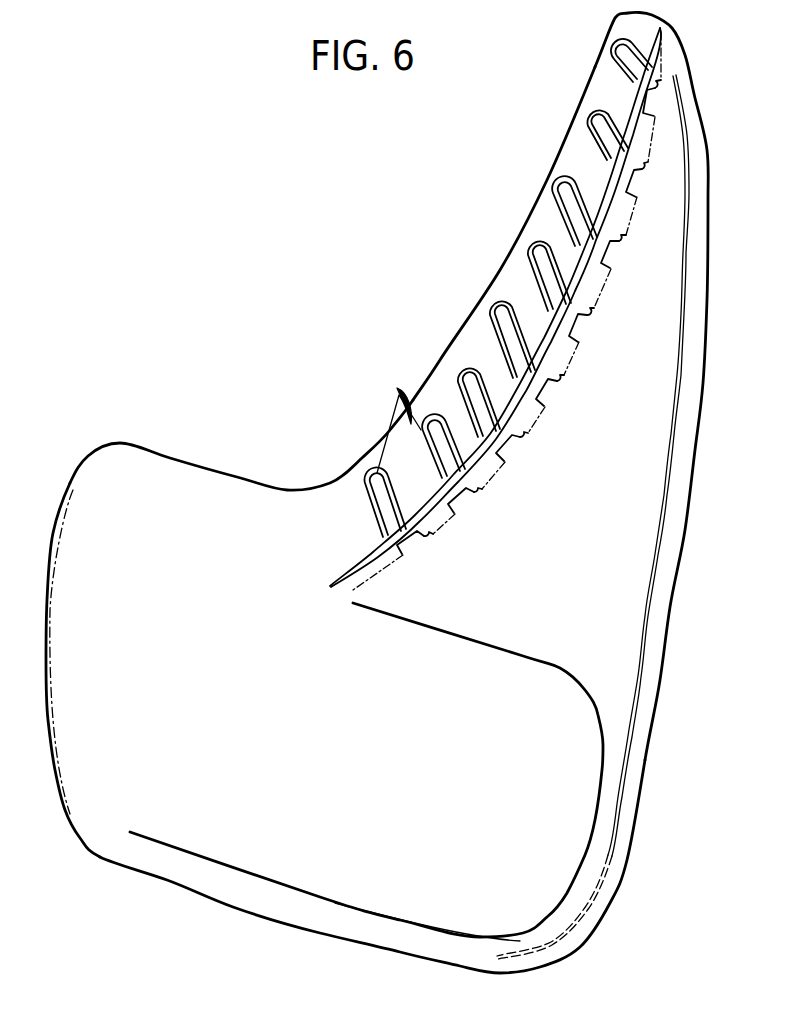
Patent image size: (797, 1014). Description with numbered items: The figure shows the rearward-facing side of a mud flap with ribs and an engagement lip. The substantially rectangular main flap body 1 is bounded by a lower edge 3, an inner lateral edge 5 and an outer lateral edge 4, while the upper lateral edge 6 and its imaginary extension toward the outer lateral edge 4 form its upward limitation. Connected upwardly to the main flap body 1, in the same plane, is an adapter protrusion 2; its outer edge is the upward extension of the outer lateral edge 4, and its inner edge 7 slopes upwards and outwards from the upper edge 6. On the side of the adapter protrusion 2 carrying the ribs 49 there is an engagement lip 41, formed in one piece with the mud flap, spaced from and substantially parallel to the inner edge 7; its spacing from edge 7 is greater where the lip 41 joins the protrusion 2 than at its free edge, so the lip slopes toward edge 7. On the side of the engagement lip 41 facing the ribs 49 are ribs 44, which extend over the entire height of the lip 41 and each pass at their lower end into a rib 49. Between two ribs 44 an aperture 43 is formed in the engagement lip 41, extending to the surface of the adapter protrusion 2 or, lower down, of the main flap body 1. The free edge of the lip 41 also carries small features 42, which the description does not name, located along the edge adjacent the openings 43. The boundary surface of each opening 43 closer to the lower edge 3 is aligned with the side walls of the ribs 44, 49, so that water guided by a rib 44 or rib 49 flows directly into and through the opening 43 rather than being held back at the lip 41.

The main flap body 1 is at (575, 835).
The adapter protrusion 2 is at (660, 377).
The lower edge 3 is at (238, 912).
The outer lateral edge 4 is at (672, 630).
The inner lateral edge 5 is at (55, 755).
The upper lateral edge 6 is at (240, 478).
The inner edge 7 is at (530, 210).
The engagement lip 41 is at (600, 285).
The projections 42 is at (547, 427).
The aperture 43 is at (637, 185).
The ribs 44 is at (590, 170).
The ribs 49 is at (394, 424).